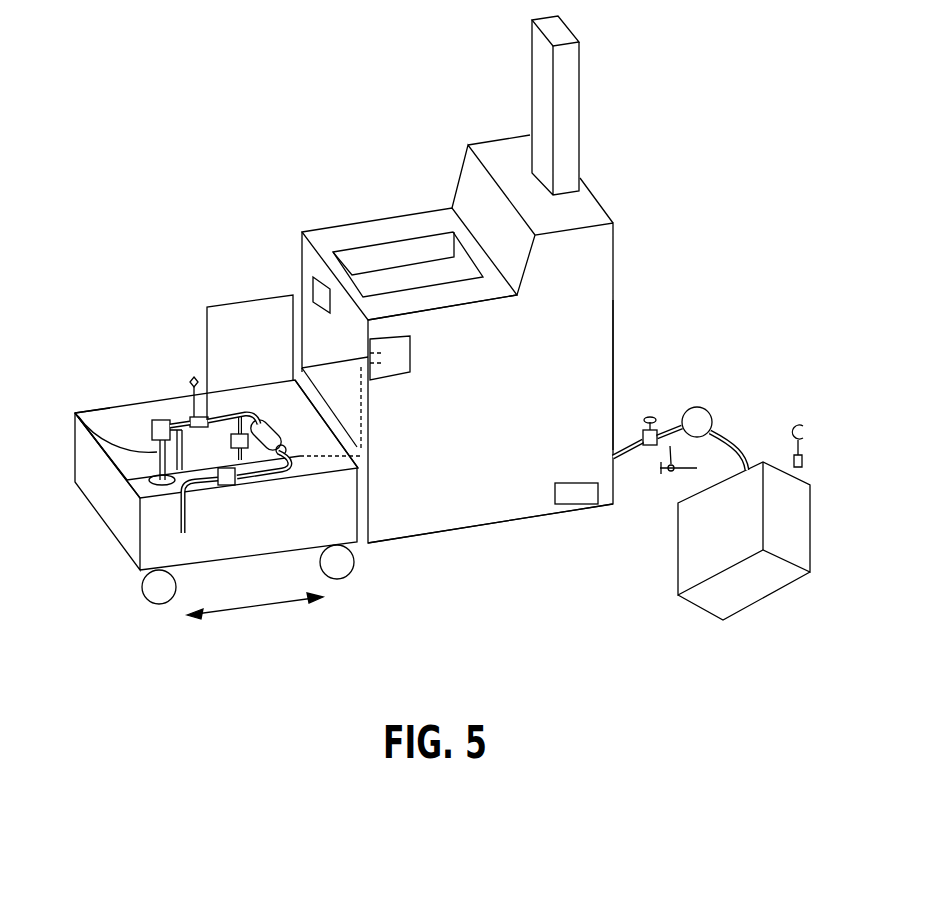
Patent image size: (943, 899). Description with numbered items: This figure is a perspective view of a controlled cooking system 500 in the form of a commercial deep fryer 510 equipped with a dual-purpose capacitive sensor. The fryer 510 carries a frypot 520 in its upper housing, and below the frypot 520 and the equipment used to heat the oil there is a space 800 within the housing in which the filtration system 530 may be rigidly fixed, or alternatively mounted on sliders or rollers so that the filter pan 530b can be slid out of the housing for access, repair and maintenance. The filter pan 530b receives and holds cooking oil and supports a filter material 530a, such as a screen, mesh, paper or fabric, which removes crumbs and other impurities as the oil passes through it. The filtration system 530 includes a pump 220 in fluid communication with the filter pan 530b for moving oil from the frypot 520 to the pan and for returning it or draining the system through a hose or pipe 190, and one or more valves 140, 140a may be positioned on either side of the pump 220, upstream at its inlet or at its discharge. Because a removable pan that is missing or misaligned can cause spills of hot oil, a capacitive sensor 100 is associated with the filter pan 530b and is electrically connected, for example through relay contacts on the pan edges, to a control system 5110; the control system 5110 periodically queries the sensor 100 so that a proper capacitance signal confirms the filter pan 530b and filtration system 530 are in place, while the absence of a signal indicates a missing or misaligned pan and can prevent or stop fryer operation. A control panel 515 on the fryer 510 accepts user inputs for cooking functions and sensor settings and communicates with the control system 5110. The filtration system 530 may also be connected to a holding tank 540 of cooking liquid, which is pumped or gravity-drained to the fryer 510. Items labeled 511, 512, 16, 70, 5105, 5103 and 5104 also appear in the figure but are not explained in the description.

The controlled cooking system 500 is at (677, 183).
The deep fryer 510 is at (604, 322).
The side wall of housing 511 is at (600, 390).
The base of housing 512 is at (483, 515).
The control panel 515 is at (317, 294).
The frypot 520 is at (392, 258).
The control system 5110 is at (571, 507).
The space 800 is at (363, 481).
The filtration system 530 is at (127, 537).
The filter material 530a is at (130, 478).
The filter pan 530b is at (92, 495).
The cart corner 16 is at (75, 413).
The hose or pipe 190 is at (185, 535).
The sensor 100 is at (317, 467).
The valve 140 is at (158, 418).
The valve 140a is at (230, 486).
The probe 70 is at (194, 380).
The pump 220 is at (283, 443).
The holding tank 540 is at (787, 483).
The valve 5105 is at (660, 430).
The pressure gauge 5103 is at (697, 408).
The fitting 5104 is at (672, 475).